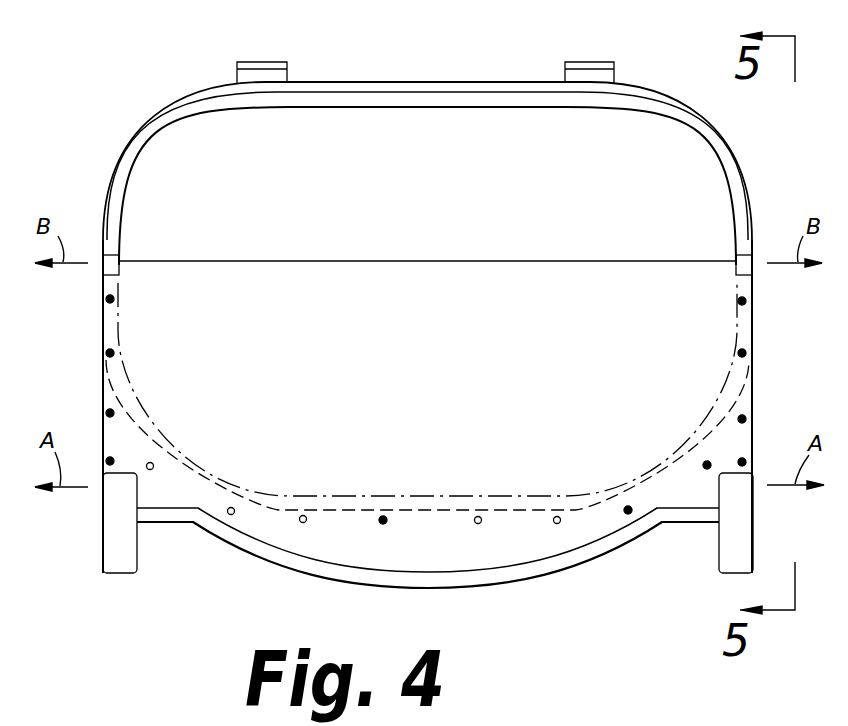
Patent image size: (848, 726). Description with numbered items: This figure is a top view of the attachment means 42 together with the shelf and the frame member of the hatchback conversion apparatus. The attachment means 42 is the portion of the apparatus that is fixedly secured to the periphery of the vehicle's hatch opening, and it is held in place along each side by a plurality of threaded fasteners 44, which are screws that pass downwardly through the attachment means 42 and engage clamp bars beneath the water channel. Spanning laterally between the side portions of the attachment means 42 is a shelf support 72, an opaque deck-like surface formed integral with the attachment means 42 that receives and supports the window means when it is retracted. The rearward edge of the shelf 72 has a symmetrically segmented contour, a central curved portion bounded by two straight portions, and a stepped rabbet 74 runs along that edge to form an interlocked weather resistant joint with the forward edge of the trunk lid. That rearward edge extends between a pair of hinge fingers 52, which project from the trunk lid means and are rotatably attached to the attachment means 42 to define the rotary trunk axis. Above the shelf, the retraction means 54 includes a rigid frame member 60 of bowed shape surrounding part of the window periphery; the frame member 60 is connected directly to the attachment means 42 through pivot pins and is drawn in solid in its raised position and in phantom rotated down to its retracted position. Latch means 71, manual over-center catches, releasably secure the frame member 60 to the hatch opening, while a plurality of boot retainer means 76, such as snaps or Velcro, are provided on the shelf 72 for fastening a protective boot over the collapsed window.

The attachment means 42 is at (758, 320).
The threaded fasteners 44 is at (106, 299).
The hinge fingers 52 is at (134, 568).
The retraction means 54 is at (460, 76).
The frame member 60 is at (362, 90).
The latch means 71 is at (258, 62).
The shelf support 72 is at (457, 260).
The stepped rabbet 74 is at (518, 571).
The boot retainer means 76 is at (113, 353).